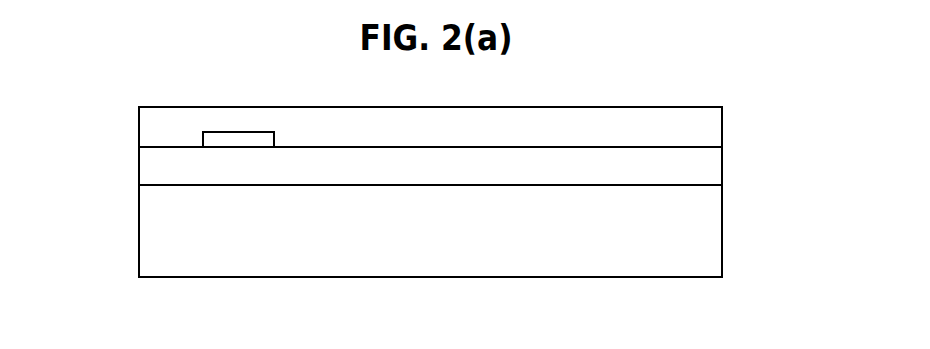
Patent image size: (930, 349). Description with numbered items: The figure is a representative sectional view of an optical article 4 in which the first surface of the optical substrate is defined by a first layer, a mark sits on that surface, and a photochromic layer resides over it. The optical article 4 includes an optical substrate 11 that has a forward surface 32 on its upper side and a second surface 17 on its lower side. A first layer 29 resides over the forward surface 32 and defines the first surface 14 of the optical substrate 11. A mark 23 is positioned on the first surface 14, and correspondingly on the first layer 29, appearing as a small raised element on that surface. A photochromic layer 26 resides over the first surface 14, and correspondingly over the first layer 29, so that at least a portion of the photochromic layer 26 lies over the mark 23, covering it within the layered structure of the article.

The optical article 4 is at (80, 311).
The optical substrate 11 is at (706, 236).
The first surface 14 is at (545, 147).
The second surface 17 is at (593, 277).
The mark 23 is at (229, 140).
The photochromic layer 26 is at (710, 126).
The first layer 29 is at (708, 170).
The forward surface 32 is at (430, 185).